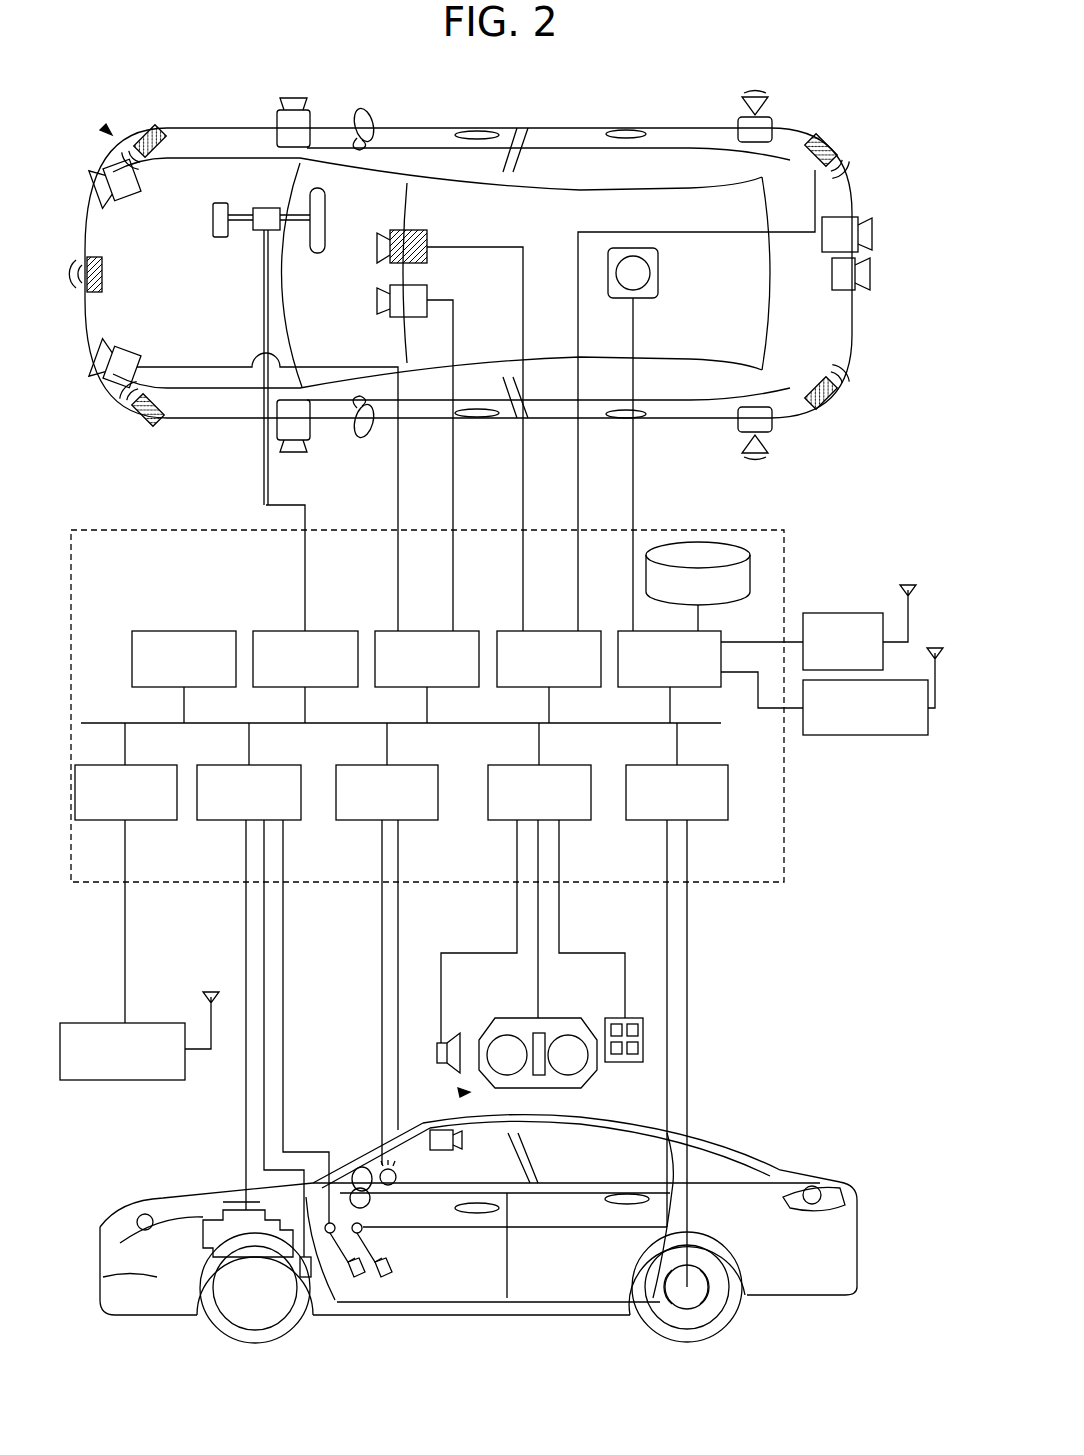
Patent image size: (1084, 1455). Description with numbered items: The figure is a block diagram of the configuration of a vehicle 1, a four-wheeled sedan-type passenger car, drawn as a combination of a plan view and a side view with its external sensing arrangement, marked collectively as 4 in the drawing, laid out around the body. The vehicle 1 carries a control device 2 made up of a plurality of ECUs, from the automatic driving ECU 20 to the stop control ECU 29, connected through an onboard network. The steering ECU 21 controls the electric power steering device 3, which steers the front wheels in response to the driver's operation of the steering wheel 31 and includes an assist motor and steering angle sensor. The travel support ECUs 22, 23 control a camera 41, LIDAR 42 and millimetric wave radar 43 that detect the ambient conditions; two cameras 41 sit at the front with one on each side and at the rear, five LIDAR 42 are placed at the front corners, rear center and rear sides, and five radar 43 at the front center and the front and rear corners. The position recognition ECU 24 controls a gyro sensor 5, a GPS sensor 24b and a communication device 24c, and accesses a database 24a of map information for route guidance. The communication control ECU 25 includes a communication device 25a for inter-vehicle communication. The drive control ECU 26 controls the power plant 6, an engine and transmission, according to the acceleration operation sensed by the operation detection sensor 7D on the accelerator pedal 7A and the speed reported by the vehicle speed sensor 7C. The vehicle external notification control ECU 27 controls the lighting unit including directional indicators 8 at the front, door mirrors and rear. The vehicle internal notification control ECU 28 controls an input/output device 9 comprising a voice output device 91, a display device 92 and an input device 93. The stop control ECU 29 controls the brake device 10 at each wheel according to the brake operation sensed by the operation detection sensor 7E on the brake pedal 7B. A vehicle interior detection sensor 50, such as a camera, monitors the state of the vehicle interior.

The vehicle 1 is at (867, 197).
The control device 2 is at (784, 882).
The electric power steering device 3 is at (222, 237).
The sensor system 4 is at (112, 135).
The gyro sensor 5 is at (658, 265).
The power plant 6 is at (218, 1210).
The accelerator pedal 7A is at (362, 1274).
The brake pedal 7B is at (392, 1266).
The vehicle speed sensor 7C is at (306, 1280).
The operation detection sensor 7D is at (332, 1222).
The operation detection sensor 7E is at (362, 1226).
The directional indicators 8 is at (137, 1218).
The input/output device 9 is at (470, 1092).
The brake device 10 is at (690, 1312).
The automatic driving ECU 20 is at (210, 628).
The steering ECU 21 is at (333, 628).
The travel support ECU 22 is at (421, 628).
The travel support ECU 23 is at (546, 628).
The position recognition ECU 24 is at (624, 628).
The database 24a is at (693, 540).
The GPS sensor 24b is at (840, 610).
The communication device 24c is at (840, 738).
The communication control ECU 25 is at (150, 822).
The communication device 25a is at (116, 1083).
The drive control ECU 26 is at (220, 822).
The vehicle external notification control ECU 27 is at (420, 822).
The vehicle internal notification control ECU 28 is at (575, 822).
The stop control ECU 29 is at (713, 822).
The steering wheel 31 is at (317, 253).
The camera 41 is at (277, 120).
The LIDAR 42 is at (128, 198).
The millimetric wave radar 43 is at (155, 158).
The vehicle interior detection sensor 50 is at (445, 1150).
The voice output device 91 is at (438, 1040).
The display device 92 is at (490, 1040).
The input device 93 is at (630, 1062).